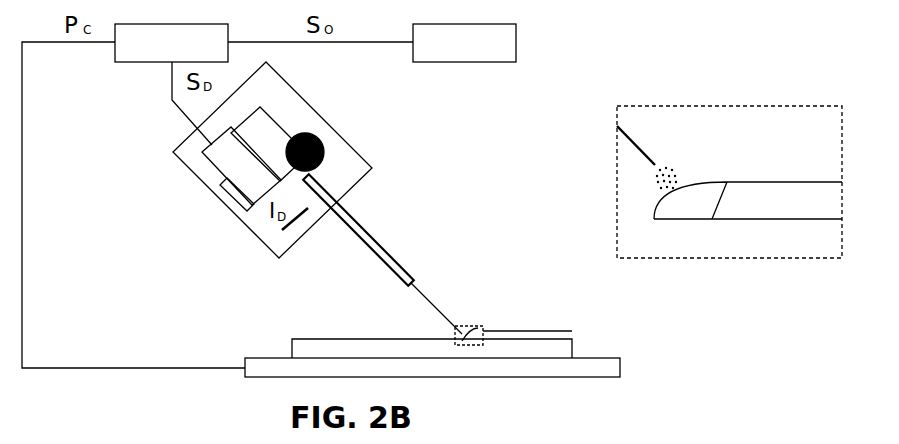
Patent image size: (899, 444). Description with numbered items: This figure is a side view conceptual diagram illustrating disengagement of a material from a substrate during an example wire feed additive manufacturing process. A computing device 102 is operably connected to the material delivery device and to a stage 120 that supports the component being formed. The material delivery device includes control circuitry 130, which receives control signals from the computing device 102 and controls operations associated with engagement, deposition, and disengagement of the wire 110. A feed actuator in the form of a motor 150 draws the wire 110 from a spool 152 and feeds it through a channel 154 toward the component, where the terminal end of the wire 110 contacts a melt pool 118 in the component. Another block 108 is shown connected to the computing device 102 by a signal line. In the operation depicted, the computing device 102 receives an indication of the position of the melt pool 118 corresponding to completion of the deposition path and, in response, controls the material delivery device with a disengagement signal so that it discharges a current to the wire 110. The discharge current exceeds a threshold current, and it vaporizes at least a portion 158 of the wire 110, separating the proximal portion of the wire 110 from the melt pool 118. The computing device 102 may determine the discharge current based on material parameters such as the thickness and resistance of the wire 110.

The computing device 102 is at (171, 43).
The output device 108 is at (464, 43).
The wire 110 is at (420, 290).
The melt pool 118 is at (477, 327).
The stage 120 is at (600, 372).
The control circuitry 130 is at (203, 150).
The motor 150 is at (323, 143).
The spool 152 is at (308, 135).
The channel 154 is at (352, 213).
The portion of wire 158 is at (677, 180).